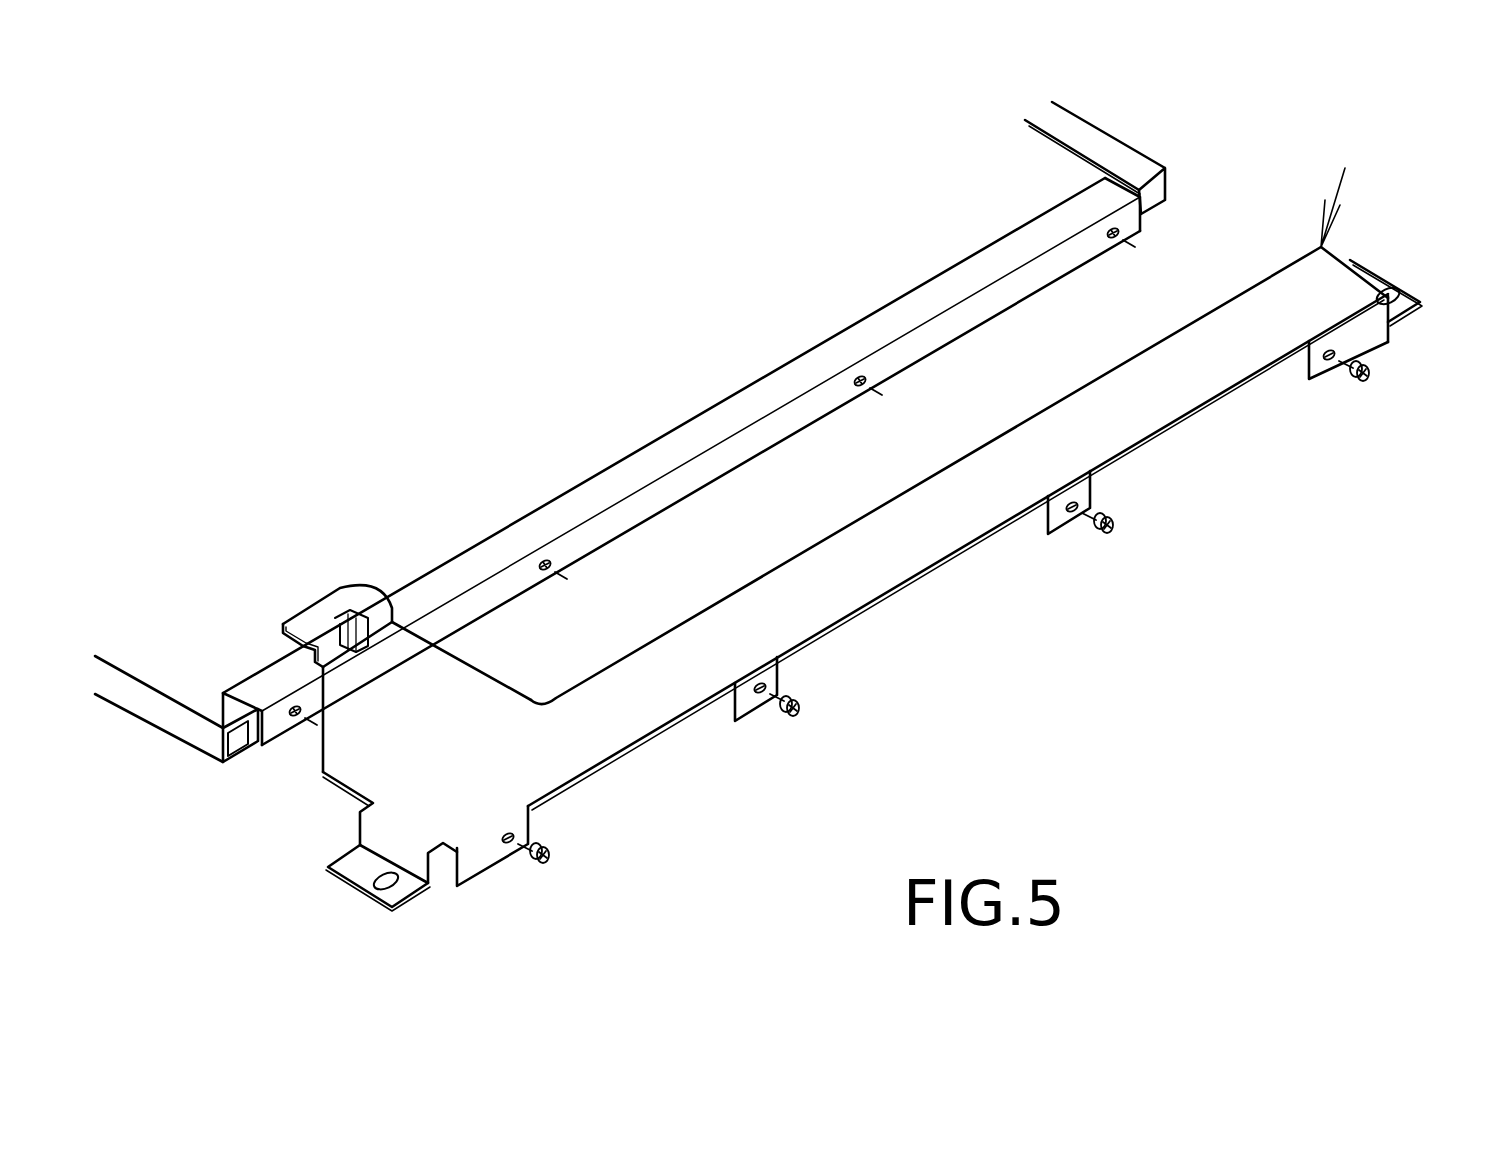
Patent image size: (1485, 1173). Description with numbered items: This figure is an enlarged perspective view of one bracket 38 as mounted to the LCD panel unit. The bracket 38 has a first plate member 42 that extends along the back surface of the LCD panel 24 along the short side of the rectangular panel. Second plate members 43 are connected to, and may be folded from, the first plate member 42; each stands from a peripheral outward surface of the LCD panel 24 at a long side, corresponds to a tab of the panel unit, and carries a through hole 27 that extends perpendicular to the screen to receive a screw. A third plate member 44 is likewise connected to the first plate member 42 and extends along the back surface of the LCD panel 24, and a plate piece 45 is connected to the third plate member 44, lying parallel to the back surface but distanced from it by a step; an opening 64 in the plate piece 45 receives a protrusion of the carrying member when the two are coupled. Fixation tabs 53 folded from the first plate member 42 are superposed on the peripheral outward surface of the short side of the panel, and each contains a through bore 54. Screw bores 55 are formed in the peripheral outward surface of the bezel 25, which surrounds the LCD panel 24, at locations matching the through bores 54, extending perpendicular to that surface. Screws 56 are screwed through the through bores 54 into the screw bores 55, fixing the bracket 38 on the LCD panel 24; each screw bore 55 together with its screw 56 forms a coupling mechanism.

The LCD panel 24 is at (236, 742).
The bezel 25 is at (1165, 160).
The through hole 27 is at (382, 880).
The bracket 38 is at (1357, 184).
The first plate member 42 is at (960, 457).
The second plate member 43 is at (335, 868).
The third plate member 44 is at (492, 677).
The plate piece 45 is at (330, 601).
The fixation tab 53 is at (467, 870).
The through bore 54 is at (514, 840).
The screw bore 55 is at (289, 705).
The screw 56 is at (550, 862).
The opening 64 is at (350, 626).